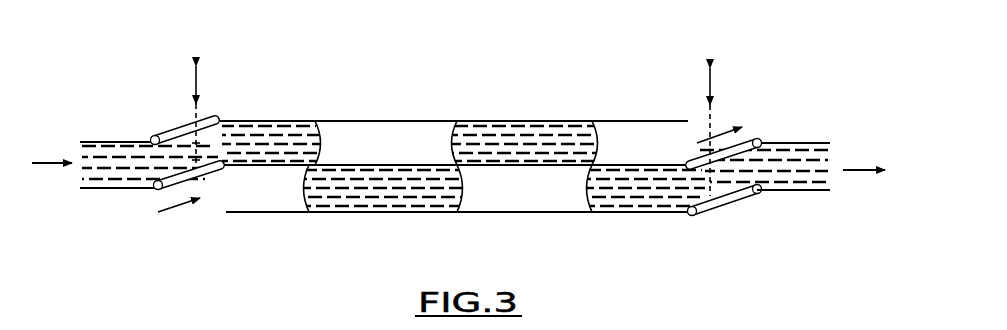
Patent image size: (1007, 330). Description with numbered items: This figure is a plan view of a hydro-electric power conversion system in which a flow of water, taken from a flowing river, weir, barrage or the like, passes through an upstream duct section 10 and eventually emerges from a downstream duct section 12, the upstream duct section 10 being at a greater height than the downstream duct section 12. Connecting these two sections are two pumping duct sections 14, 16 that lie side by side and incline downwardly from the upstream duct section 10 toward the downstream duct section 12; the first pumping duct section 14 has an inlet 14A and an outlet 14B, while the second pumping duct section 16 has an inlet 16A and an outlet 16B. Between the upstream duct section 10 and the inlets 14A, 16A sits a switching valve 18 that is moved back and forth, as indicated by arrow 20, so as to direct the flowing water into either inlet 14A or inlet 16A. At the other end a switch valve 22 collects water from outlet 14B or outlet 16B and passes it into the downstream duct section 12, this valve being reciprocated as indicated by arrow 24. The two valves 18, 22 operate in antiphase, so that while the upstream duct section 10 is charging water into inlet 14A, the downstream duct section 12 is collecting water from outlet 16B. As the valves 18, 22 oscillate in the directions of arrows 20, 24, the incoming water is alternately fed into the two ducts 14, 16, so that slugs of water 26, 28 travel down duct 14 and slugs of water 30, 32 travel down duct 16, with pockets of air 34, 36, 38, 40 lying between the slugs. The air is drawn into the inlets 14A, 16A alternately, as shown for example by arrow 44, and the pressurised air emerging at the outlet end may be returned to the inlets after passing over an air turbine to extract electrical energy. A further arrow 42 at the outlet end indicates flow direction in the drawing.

The upstream duct section 10 is at (80, 141).
The downstream duct section 12 is at (800, 142).
The pumping duct section 14 is at (400, 121).
The inlet of pumping duct section 14A is at (200, 122).
The outlet of pumping duct section 14B is at (692, 138).
The pumping duct section 16 is at (486, 213).
The inlet of pumping duct section 16A is at (228, 193).
The outlet of pumping duct section 16B is at (694, 213).
The switching valve 18 is at (154, 136).
The arrow 20 is at (198, 87).
The switch valve 22 is at (736, 204).
The arrow 24 is at (713, 88).
The slug of water 26 is at (273, 143).
The slug of water 28 is at (523, 132).
The slug of water 30 is at (374, 204).
The slug of water 32 is at (635, 208).
The pocket of air 34 is at (365, 147).
The pocket of air 36 is at (632, 148).
The pocket of air 38 is at (263, 203).
The pocket of air 40 is at (547, 203).
The outlet flow direction 42 is at (706, 132).
The arrow 44 is at (176, 206).